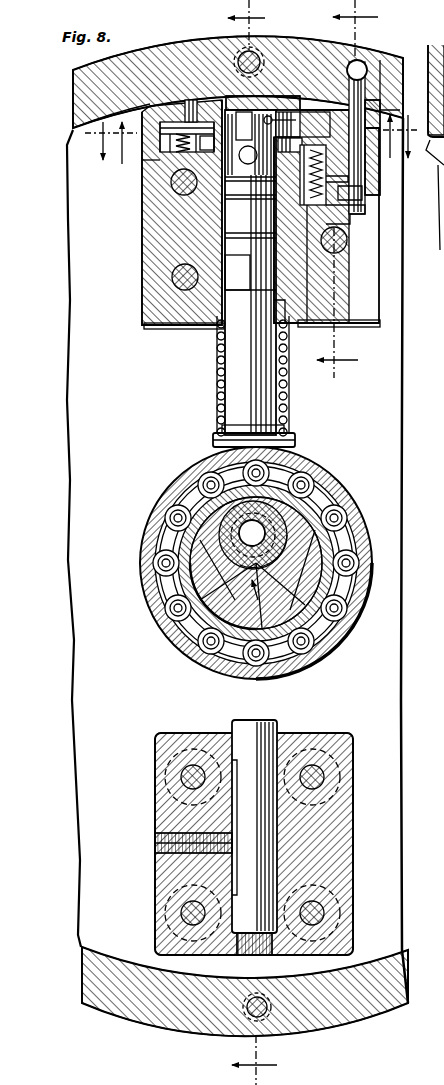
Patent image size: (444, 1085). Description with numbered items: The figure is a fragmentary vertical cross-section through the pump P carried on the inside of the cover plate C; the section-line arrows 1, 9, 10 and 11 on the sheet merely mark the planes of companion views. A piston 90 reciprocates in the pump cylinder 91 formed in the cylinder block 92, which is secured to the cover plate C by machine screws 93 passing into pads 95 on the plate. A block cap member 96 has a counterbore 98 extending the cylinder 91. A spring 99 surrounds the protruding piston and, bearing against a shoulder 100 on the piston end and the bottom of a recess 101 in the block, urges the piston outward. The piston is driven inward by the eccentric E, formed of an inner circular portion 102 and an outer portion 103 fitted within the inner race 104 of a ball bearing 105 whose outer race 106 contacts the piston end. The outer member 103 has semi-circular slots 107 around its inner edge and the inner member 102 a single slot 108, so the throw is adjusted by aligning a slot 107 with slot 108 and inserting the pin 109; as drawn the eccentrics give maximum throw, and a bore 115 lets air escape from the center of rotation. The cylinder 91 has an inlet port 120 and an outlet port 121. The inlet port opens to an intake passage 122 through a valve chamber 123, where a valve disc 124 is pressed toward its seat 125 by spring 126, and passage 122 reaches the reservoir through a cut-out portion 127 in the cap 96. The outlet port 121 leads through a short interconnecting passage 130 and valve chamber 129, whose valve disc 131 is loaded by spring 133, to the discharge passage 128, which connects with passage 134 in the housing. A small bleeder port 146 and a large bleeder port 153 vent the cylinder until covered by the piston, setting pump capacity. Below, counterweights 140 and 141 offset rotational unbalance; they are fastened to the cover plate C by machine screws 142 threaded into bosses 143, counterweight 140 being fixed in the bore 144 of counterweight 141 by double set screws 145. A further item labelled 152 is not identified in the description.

The cover plate C is at (86, 85).
The cut-out portion 127 is at (147, 100).
The section line 1- 1 is at (242, 542).
The section line 9- 9 is at (354, 189).
The section line 10- 10 is at (252, 147).
The section line 11- 11 is at (258, 147).
The pump P is at (142, 309).
The cylinder block 92 is at (168, 314).
The pads 95 is at (186, 330).
The machine screws 93 is at (177, 270).
The valve member 124 is at (142, 176).
The valve chamber 123 is at (155, 176).
The spring 126 is at (170, 204).
The seat 125 is at (165, 130).
The intake passage 122 is at (190, 118).
The counterbore 98 is at (237, 97).
The piston 90 is at (243, 372).
The large bleeder port 153 is at (249, 168).
The pump cylinder 91 is at (245, 185).
The inlet port 120 is at (257, 131).
The small bleeder port 146 is at (297, 124).
The block cap member 96 is at (264, 96).
The spring 99 is at (291, 398).
The shoulder 100 is at (295, 440).
The recess 101 is at (298, 320).
The outlet port 121 is at (292, 116).
The spring 152 is at (333, 100).
The passage 134 is at (362, 66).
The discharge passage 128 is at (372, 98).
The outlet valve member 131 is at (372, 108).
The short interconnecting passage 130 is at (345, 178).
The valve chamber 129 is at (362, 197).
The spring 133 is at (350, 214).
The inner circular portion 102 is at (227, 587).
The inner race 104 is at (240, 556).
The outer portion 103 is at (203, 627).
The ball bearing 105 is at (161, 563).
The outer race 106 is at (192, 572).
The slot 108 is at (320, 630).
The bore 115 is at (255, 533).
The semi-circular slots 107 is at (332, 580).
The eccentric E is at (252, 582).
The counterweight 141 is at (340, 845).
The pin 109 is at (250, 586).
The bore 144 is at (260, 952).
The double set screws 145 is at (210, 846).
The machine screws 142 is at (317, 776).
The bosses 143 is at (347, 750).
The counterweight 140 is at (237, 925).